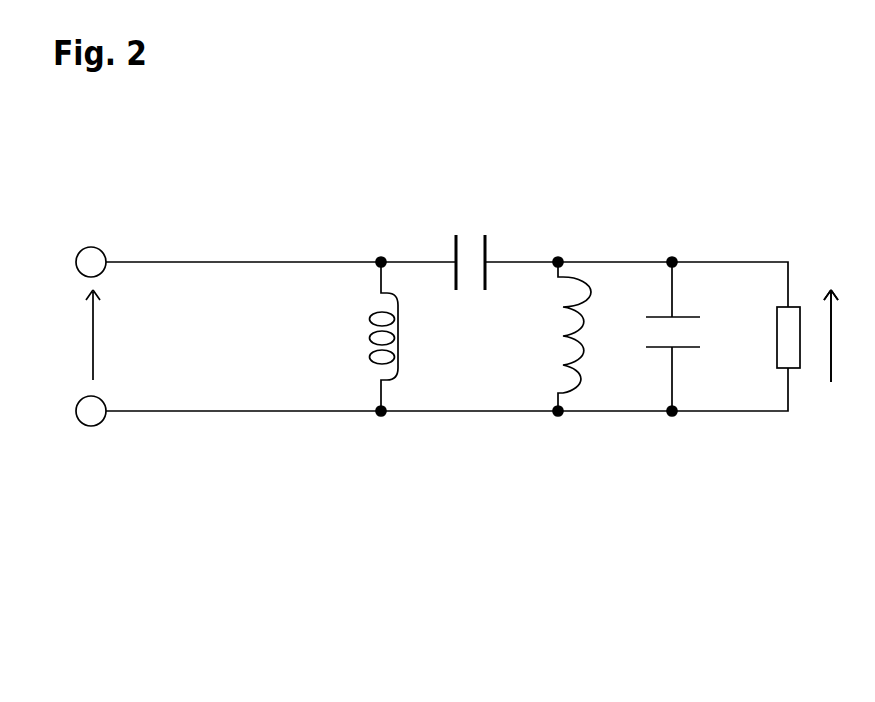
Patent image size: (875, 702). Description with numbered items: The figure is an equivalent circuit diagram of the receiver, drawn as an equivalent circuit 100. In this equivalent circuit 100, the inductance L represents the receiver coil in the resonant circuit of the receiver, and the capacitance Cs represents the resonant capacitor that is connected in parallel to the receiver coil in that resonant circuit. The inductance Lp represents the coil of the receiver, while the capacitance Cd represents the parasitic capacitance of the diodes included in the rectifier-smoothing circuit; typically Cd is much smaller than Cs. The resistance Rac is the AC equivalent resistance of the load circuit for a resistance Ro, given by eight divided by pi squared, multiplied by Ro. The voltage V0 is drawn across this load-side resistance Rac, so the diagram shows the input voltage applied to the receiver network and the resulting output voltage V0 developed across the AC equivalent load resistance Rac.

The equivalent circuit 100 is at (703, 488).
The inductance of the receiver coil L is at (374, 336).
The capacitance of the resonant capacitor Cs is at (462, 283).
The inductance of the coil Lp is at (560, 336).
The parasitic capacitance of the diodes Cd is at (666, 336).
The AC equivalent resistance of the load circuit Rac is at (768, 351).
The output voltage V0 is at (844, 336).